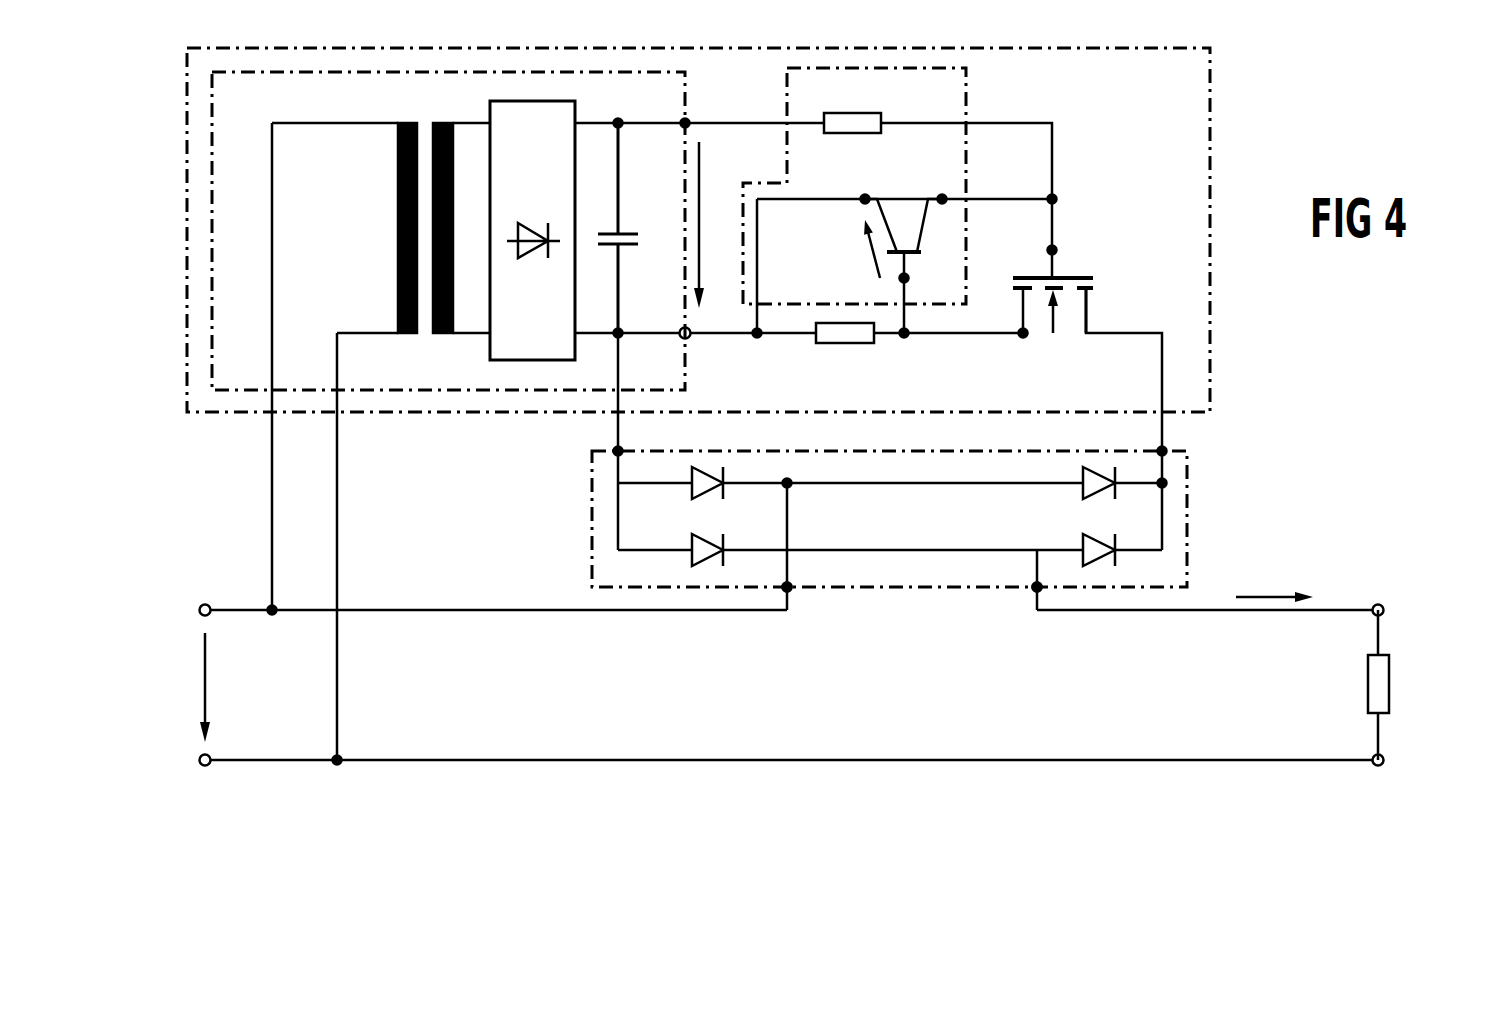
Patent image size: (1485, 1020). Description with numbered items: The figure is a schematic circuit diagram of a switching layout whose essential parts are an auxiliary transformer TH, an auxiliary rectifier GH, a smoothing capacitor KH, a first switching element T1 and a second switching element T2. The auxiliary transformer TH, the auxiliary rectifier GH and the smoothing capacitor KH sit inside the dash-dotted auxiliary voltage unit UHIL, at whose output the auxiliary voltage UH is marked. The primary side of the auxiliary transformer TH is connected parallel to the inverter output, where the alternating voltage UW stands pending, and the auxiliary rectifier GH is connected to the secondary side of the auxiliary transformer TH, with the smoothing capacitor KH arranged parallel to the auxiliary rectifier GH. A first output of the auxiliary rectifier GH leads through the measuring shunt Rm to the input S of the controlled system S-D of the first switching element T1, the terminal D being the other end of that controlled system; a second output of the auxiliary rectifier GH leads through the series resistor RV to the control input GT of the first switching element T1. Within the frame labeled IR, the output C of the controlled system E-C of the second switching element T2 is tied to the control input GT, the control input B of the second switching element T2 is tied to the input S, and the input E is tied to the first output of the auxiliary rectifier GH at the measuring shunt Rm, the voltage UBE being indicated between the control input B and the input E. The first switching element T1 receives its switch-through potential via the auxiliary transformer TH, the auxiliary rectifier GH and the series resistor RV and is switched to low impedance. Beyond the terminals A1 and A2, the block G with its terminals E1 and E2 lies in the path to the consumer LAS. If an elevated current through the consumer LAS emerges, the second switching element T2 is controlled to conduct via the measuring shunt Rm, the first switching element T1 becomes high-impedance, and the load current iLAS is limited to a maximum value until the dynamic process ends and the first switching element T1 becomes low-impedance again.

The auxiliary transformer TH is at (398, 231).
The auxiliary rectifier GH is at (522, 360).
The smoothing capacitor KH is at (625, 233).
The auxiliary voltage UH is at (700, 168).
The auxiliary voltage unit UHIL is at (396, 380).
The series resistor RV is at (852, 113).
The current regulator IR is at (966, 93).
The second switching element T2 is at (905, 233).
The input of the controlled system E-C E is at (866, 183).
The output of the controlled system E- C is at (944, 183).
The control input of the second switching element B is at (915, 281).
The base-emitter voltage UBE is at (852, 254).
The control input of the first switching element GT is at (1033, 254).
The first switching element T1 is at (1077, 272).
The input of the controlled system S-D S is at (1015, 318).
The controlled system terminal D is at (1099, 311).
The measuring shunt Rm is at (845, 345).
The terminal A1 is at (618, 451).
The terminal A2 is at (1162, 451).
The rectifier bridge G is at (889, 519).
The input terminal E1 is at (788, 592).
The input terminal E2 is at (1035, 592).
The load current iLAS is at (1262, 594).
The alternating voltage UW is at (205, 669).
The consumer LAS is at (1390, 683).